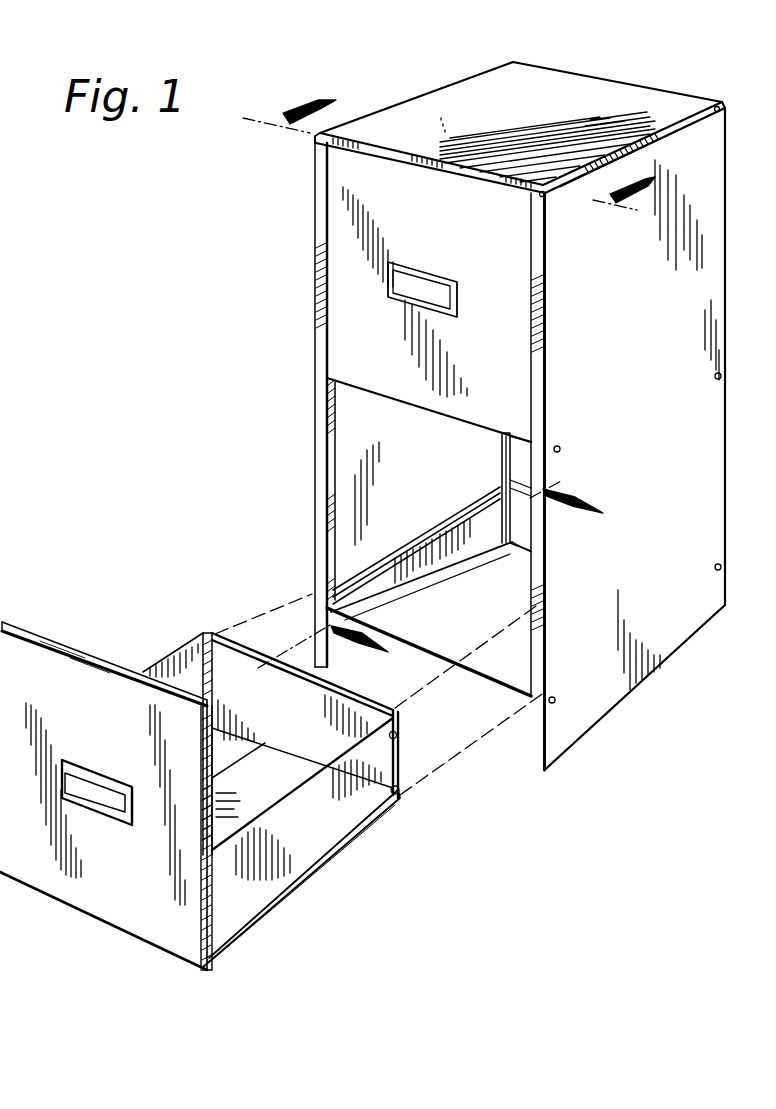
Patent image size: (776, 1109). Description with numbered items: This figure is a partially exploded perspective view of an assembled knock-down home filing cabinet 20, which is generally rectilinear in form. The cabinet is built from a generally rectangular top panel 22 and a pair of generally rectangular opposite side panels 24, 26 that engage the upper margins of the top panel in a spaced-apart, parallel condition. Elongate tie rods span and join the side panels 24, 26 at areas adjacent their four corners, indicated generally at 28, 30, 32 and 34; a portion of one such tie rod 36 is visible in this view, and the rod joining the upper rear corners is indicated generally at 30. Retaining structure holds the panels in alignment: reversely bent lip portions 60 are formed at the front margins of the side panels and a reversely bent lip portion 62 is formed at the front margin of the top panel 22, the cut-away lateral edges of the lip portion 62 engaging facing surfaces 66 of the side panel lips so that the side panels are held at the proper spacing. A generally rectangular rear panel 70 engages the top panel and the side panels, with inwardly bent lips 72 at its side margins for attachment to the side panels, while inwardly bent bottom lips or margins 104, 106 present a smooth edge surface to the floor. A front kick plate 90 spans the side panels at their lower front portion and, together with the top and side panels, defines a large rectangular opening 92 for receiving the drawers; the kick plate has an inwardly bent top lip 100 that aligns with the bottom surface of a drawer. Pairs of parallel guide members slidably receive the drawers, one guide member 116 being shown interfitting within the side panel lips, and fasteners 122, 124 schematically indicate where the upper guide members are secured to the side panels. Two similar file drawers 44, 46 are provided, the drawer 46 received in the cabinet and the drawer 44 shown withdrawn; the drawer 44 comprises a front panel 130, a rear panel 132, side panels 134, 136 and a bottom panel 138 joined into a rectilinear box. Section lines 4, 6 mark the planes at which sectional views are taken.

The file cabinet 20 is at (282, 325).
The top panel 22 is at (405, 115).
The side panel 24 is at (387, 446).
The side panel 26 is at (632, 443).
The corner portion 28 is at (552, 199).
The upper rear corner portion 30 is at (722, 105).
The corner portion 32 is at (554, 703).
The corner portion 34 is at (715, 566).
The tie rod 36 is at (516, 502).
The file drawer 44 is at (300, 912).
The file drawer 46 is at (345, 355).
The reversely bent lip portion 60 is at (316, 404).
The reversely bent lip portion 62 is at (416, 160).
The facing surface 66 is at (331, 430).
The rear panel 70 is at (510, 456).
The inwardly bent lip 72 is at (504, 440).
The front kick plate 90 is at (528, 768).
The opening 92 is at (515, 668).
The inwardly bent top lip 100 is at (422, 637).
The inwardly bent bottom lip 104 is at (427, 587).
The inwardly bent bottom lip 106 is at (520, 547).
The guide member 116 is at (431, 532).
The fastener 122 is at (560, 446).
The fastener 124 is at (714, 376).
The drawer front panel 130 is at (205, 970).
The drawer rear panel 132 is at (272, 723).
The drawer side panel 134 is at (318, 822).
The drawer side panel 136 is at (173, 658).
The drawer bottom panel 138 is at (232, 789).
The section line 4- 4 is at (443, 167).
The section line 6- 6 is at (430, 577).